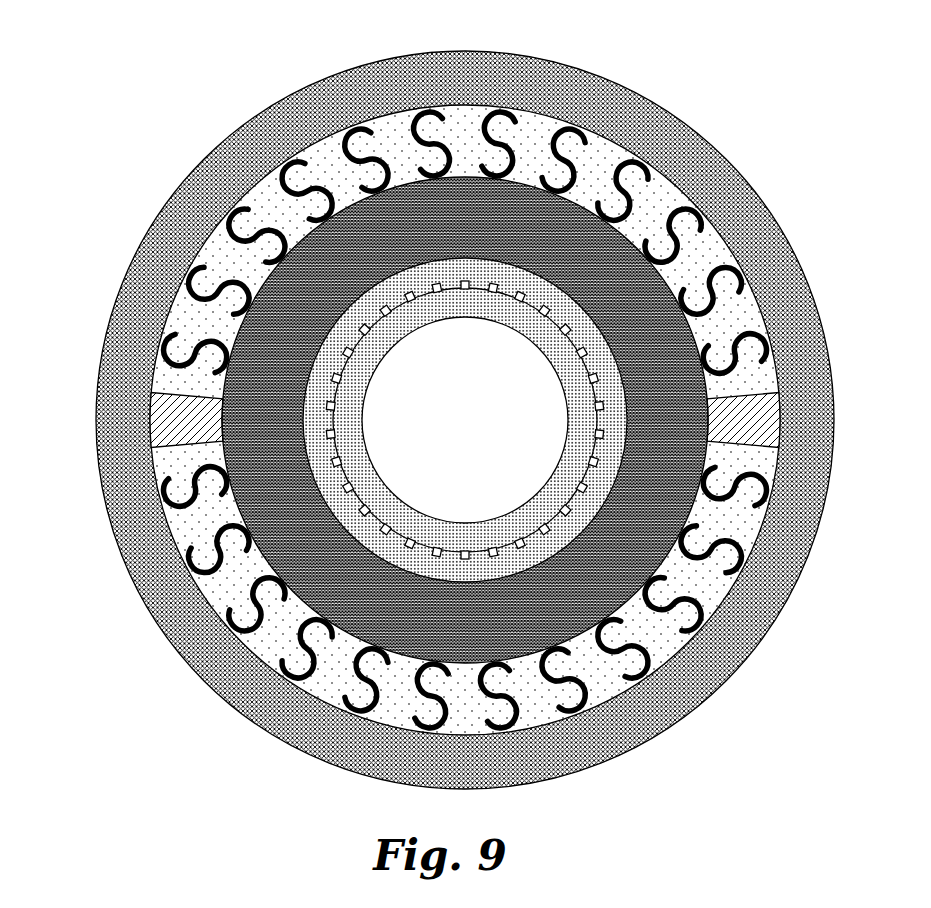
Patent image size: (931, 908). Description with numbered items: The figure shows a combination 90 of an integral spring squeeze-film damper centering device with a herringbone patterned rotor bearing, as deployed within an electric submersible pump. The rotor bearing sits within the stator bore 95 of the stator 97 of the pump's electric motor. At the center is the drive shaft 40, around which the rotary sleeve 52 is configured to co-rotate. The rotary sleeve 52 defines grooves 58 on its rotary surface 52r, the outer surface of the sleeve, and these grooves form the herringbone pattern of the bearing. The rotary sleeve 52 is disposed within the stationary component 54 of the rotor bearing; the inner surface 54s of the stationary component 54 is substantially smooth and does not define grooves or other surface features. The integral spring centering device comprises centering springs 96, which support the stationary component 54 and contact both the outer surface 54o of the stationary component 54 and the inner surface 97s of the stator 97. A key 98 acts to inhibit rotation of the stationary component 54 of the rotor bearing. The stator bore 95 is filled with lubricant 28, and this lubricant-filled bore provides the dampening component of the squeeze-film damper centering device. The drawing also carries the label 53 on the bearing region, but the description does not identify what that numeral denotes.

The combination 90 is at (697, 76).
The stationary component 54 is at (357, 212).
The outer surface of stationary component 54o is at (632, 242).
The inner surface of stationary component 54s is at (327, 487).
The lubricant 28 is at (705, 588).
The drive shaft 40 is at (466, 372).
The rotary sleeve 52 is at (558, 486).
The rotary surface 52r is at (332, 427).
The grooves 58 is at (595, 418).
The sleeve 53 is at (518, 552).
The key 98 is at (163, 437).
The stator 97 is at (144, 598).
The inner surface of stator 97s is at (218, 592).
The centering springs 96 is at (295, 632).
The stator bore 95 is at (603, 687).